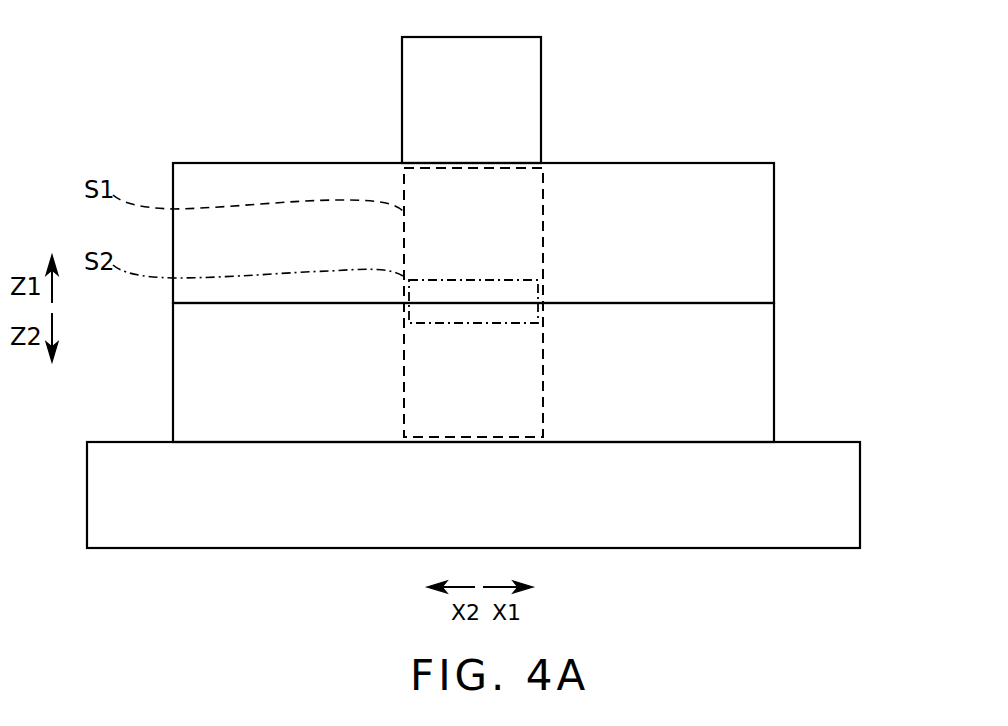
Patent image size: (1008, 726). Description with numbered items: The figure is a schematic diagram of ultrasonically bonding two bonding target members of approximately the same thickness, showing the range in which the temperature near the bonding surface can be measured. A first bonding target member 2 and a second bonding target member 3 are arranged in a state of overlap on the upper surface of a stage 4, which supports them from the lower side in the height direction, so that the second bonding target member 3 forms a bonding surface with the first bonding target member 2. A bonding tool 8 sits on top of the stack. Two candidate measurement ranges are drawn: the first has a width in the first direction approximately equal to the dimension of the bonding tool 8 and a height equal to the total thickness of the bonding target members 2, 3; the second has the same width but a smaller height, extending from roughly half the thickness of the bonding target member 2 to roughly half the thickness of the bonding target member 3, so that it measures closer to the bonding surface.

The first bonding target member 2 is at (774, 369).
The second bonding target member 3 is at (774, 229).
The stage 4 is at (860, 489).
The bonding tool 8 is at (541, 97).